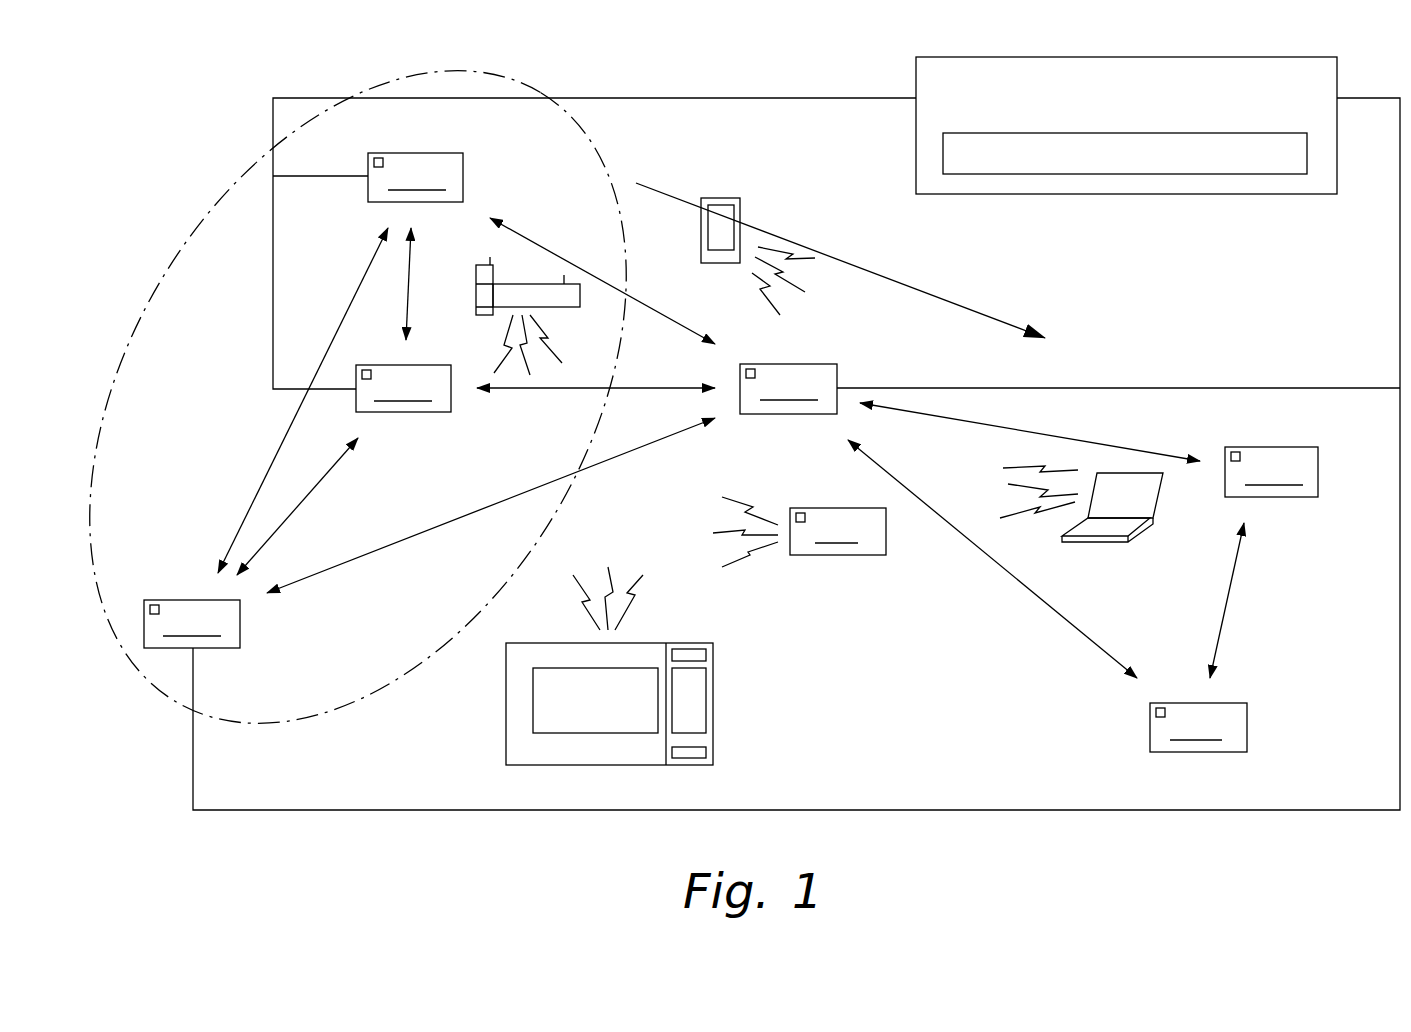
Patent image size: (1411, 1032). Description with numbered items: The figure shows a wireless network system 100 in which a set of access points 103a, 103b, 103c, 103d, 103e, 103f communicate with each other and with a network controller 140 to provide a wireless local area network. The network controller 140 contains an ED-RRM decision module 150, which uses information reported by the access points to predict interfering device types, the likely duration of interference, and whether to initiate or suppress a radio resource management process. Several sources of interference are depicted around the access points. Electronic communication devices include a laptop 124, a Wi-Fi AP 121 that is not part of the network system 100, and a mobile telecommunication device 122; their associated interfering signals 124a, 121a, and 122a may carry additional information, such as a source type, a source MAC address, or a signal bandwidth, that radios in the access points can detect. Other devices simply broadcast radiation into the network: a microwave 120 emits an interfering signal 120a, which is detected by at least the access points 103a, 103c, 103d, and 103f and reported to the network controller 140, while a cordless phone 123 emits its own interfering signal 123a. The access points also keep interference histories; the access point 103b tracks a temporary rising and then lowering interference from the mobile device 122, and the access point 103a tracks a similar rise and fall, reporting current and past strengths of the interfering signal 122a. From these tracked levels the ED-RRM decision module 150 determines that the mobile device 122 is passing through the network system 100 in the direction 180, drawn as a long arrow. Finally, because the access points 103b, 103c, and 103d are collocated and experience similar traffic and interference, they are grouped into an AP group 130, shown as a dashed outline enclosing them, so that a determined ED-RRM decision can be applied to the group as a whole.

The wireless network system 100 is at (206, 74).
The AP group 130 is at (200, 251).
The network controller 140 is at (1257, 57).
The ED-RRM decision module 150 is at (1237, 133).
The access point 103a is at (733, 521).
The access point 103b is at (466, 363).
The access point 103c is at (476, 470).
The access point 103d is at (192, 624).
The access point 103e is at (1264, 562).
The access point 103f is at (1198, 727).
The Wi-Fi AP 121 is at (838, 531).
The interfering signal 121a is at (736, 500).
The mobile telecommunication device 122 is at (720, 198).
The interfering signal 122a is at (757, 272).
The cordless phone 123 is at (570, 307).
The interfering signal 123a is at (500, 342).
The laptop 124 is at (1135, 538).
The interfering signal 124a is at (1040, 483).
The microwave 120 is at (716, 695).
The interfering signal 120a is at (638, 590).
The direction 180 is at (882, 282).